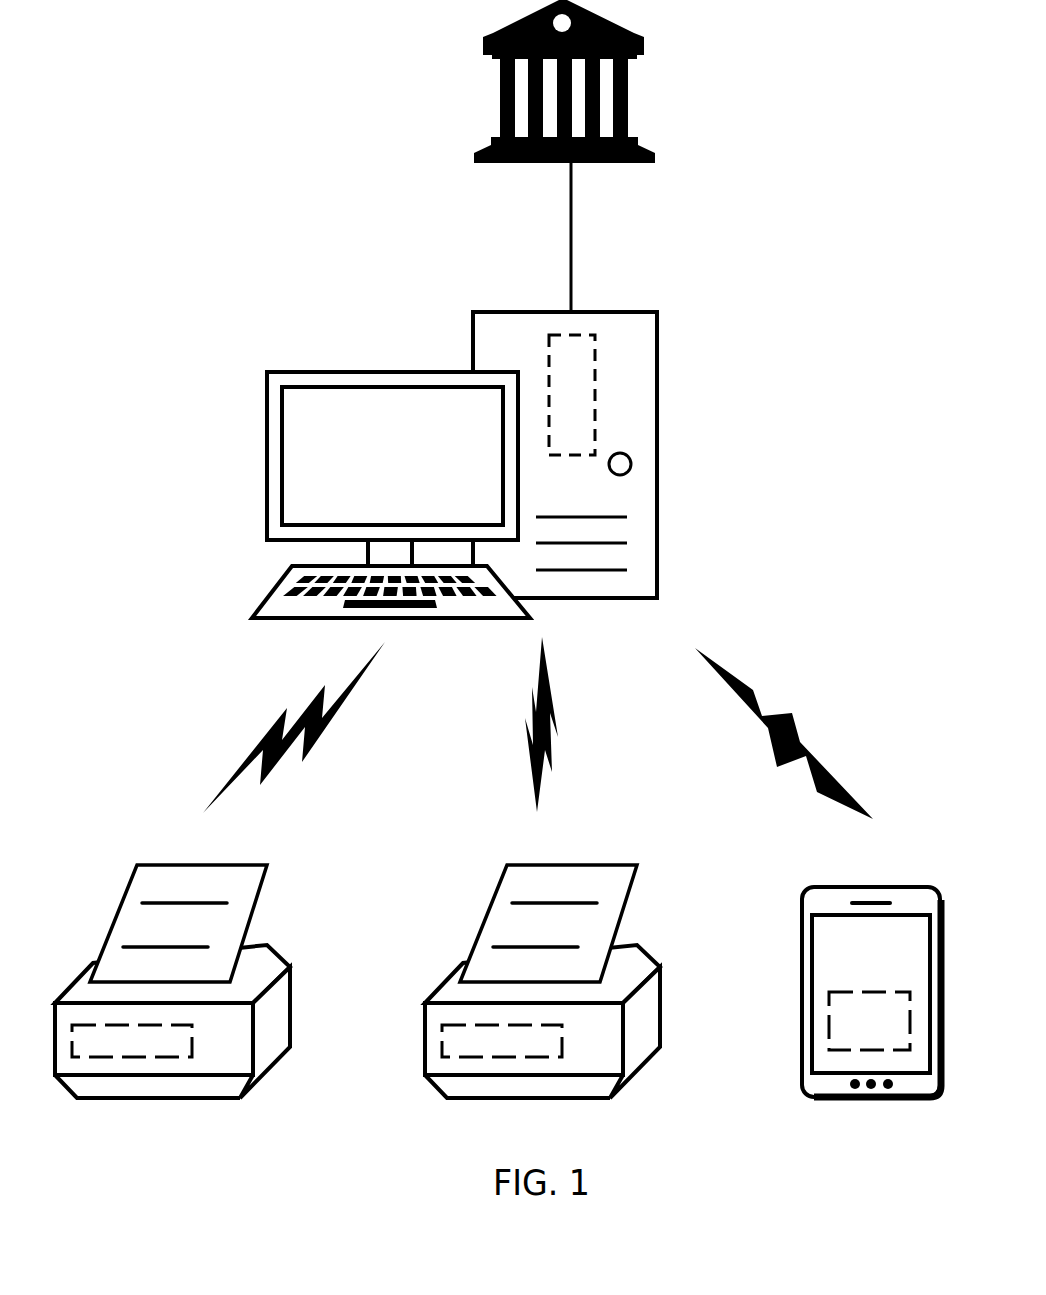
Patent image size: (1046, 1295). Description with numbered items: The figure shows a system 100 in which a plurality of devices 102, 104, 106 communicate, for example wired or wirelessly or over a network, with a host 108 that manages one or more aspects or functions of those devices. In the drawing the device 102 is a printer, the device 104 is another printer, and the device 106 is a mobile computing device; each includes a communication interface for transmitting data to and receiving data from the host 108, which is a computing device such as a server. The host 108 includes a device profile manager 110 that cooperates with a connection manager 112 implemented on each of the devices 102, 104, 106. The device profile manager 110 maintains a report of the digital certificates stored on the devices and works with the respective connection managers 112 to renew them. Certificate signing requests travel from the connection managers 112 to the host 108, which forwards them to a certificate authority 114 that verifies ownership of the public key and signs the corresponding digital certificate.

The system 100 is at (863, 632).
The printer 102 is at (282, 955).
The device 104 is at (620, 1088).
The mobile computing device 106 is at (800, 897).
The host 108 is at (659, 422).
The device profile manager 110 is at (595, 382).
The connection manager 112 is at (148, 1057).
The certificate authority 114 is at (482, 147).